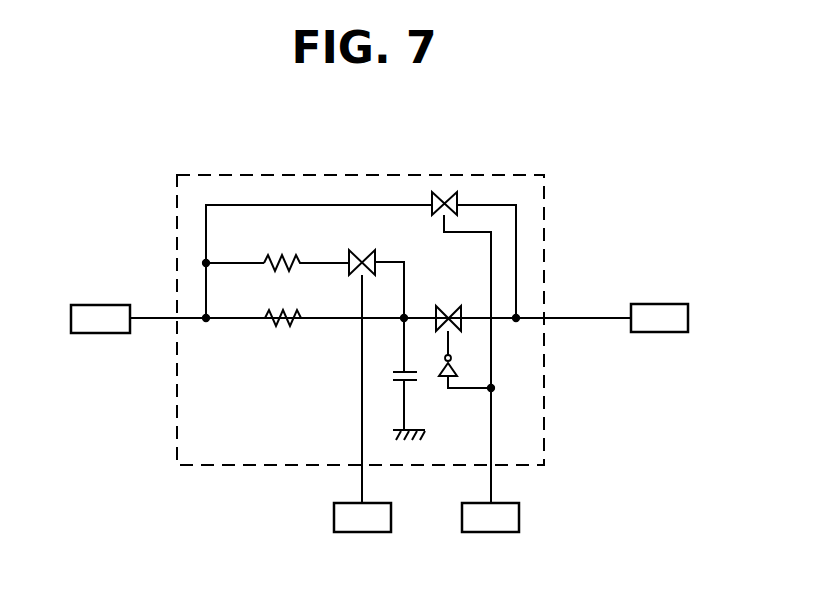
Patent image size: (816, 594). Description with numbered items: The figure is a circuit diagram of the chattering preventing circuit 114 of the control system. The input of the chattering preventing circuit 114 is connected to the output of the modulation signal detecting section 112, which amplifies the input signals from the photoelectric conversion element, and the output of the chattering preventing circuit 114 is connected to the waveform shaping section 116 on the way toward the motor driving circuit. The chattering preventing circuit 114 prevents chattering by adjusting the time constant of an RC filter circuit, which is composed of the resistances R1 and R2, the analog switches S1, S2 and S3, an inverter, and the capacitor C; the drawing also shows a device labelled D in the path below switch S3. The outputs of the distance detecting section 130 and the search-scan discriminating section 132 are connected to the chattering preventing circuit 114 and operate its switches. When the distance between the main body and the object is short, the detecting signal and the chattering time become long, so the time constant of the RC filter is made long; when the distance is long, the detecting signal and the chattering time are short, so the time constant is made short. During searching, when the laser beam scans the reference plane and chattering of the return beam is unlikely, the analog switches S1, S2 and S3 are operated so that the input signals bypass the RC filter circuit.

The modulation signal detecting section 112 is at (107, 333).
The chattering preventing circuit 114 is at (546, 212).
The waveform shaping section 116 is at (668, 332).
The distance detecting section 130 is at (373, 532).
The search-scan discriminating section 132 is at (500, 532).
The resistance R1 is at (306, 247).
The resistance R2 is at (283, 303).
The analog switch S1 is at (476, 340).
The analog switch S2 is at (381, 367).
The analog switch S3 is at (454, 315).
The capacitor C is at (410, 379).
The diode D is at (467, 368).